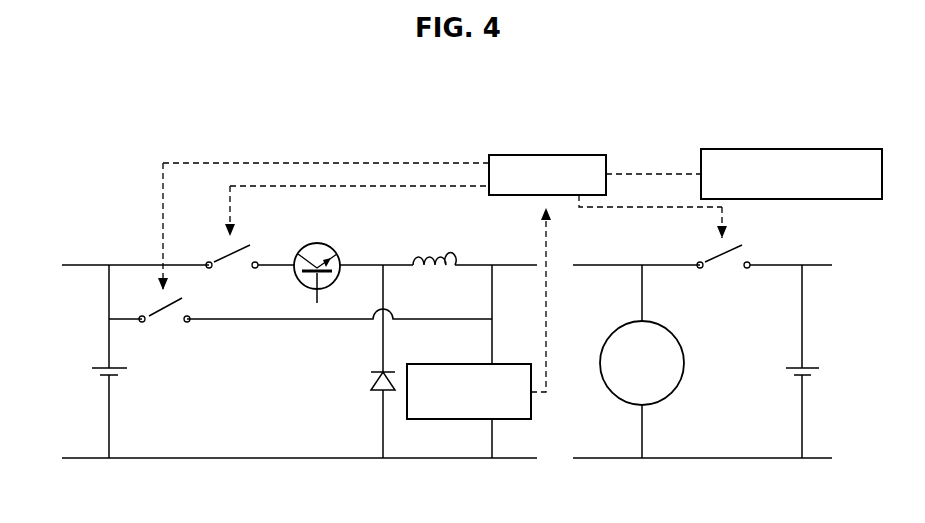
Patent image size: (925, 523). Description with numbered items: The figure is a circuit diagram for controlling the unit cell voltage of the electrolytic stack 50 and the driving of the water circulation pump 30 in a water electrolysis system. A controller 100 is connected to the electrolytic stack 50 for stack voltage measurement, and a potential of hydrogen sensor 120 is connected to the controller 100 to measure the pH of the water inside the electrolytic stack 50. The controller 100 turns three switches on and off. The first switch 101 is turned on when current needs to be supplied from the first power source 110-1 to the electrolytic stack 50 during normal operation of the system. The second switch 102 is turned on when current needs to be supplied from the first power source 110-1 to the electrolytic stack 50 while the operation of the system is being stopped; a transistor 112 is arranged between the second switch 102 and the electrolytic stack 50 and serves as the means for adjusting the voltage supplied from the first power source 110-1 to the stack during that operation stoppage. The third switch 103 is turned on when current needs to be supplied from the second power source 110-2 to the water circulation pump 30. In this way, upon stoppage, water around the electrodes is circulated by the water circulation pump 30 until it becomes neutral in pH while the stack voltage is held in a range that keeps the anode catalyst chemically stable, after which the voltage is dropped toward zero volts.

The controller 100 is at (541, 155).
The potential of hydrogen (pH) sensor 120 is at (782, 149).
The first switch 101 is at (165, 310).
The second switch 102 is at (222, 258).
The third switch 103 is at (716, 258).
The transistor 112 is at (331, 247).
The first power source 110-1 is at (93, 368).
The second power source 110-2 is at (818, 368).
The electrolytic stack 50 is at (467, 419).
The water circulation pump 30 is at (670, 333).